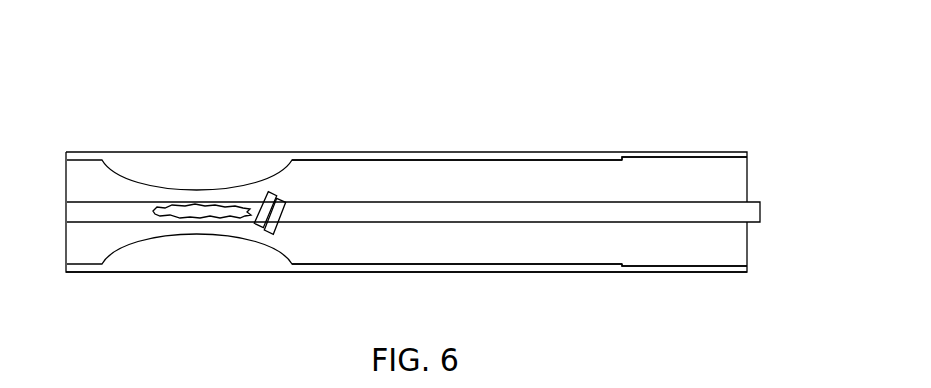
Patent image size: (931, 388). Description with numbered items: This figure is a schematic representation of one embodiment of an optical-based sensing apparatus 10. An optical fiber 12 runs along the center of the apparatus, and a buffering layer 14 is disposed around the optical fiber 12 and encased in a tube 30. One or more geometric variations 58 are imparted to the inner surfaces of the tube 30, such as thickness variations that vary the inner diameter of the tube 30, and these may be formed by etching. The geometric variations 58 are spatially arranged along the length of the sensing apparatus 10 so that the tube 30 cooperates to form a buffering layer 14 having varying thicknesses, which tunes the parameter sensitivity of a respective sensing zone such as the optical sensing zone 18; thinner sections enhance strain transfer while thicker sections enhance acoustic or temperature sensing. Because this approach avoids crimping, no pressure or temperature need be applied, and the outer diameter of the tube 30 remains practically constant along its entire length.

The optical-based sensing apparatus 10 is at (378, 83).
The optical fiber 12 is at (747, 212).
The buffering layer 14 is at (725, 251).
The optical sensing zone 18 is at (622, 138).
The tube 30 is at (685, 152).
The geometric variations 58 is at (195, 273).